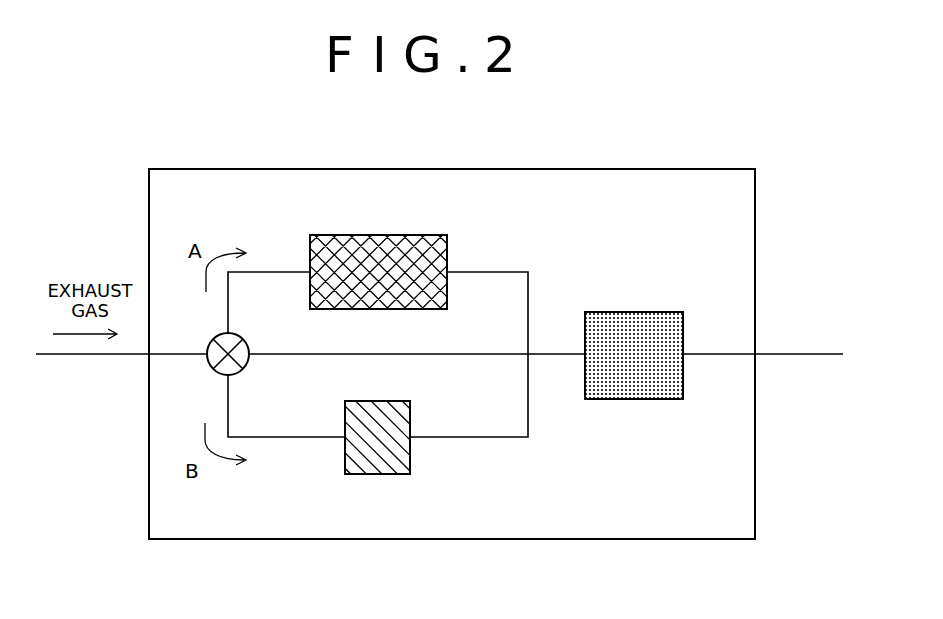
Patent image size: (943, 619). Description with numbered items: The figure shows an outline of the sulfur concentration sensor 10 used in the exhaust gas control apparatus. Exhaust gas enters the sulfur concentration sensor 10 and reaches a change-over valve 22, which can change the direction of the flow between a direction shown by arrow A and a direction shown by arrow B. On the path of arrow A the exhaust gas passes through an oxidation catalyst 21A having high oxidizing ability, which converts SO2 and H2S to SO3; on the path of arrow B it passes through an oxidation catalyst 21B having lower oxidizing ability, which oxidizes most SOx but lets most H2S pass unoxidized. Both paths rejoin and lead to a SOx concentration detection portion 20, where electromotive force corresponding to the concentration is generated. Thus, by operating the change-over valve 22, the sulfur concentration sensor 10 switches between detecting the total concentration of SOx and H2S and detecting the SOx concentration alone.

The sulfur concentration sensor 10 is at (520, 169).
The SOx concentration detection portion 20 is at (630, 312).
The oxidation catalyst 21A is at (377, 235).
The oxidation catalyst 21B is at (378, 474).
The change-over valve 22 is at (249, 354).